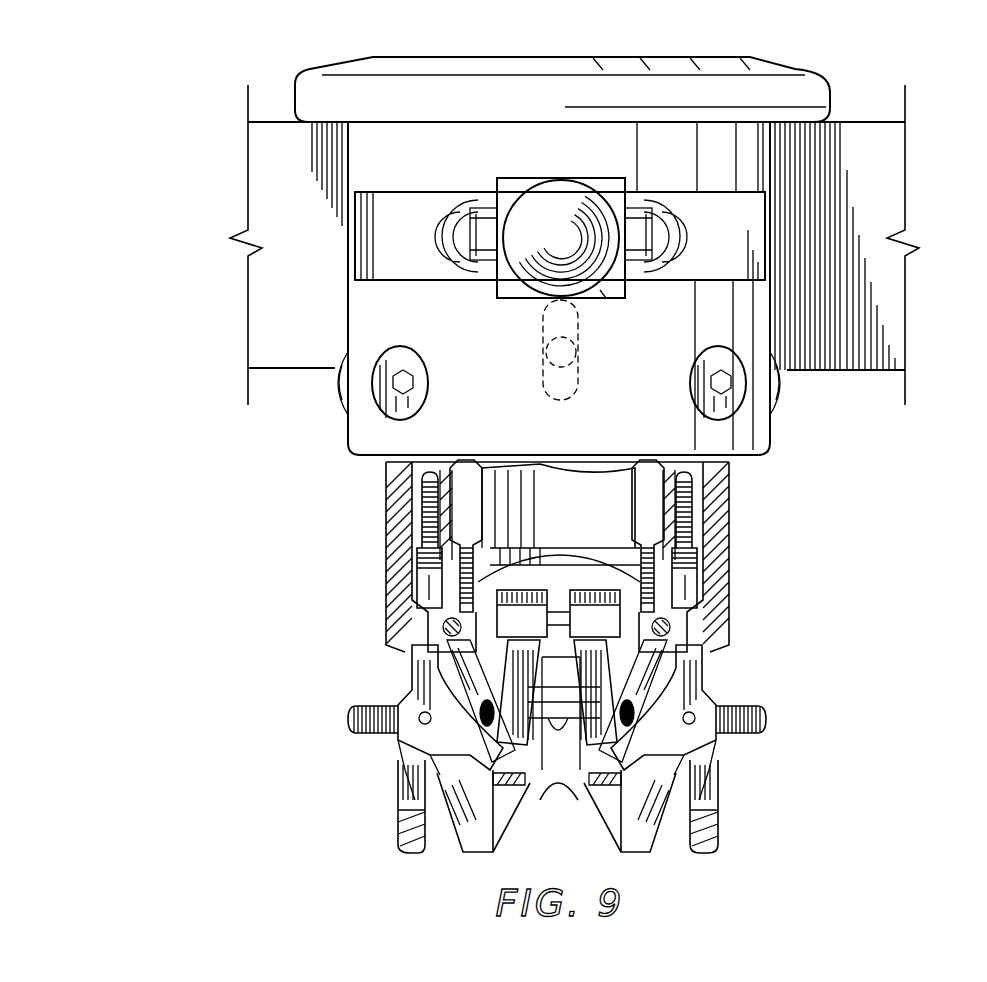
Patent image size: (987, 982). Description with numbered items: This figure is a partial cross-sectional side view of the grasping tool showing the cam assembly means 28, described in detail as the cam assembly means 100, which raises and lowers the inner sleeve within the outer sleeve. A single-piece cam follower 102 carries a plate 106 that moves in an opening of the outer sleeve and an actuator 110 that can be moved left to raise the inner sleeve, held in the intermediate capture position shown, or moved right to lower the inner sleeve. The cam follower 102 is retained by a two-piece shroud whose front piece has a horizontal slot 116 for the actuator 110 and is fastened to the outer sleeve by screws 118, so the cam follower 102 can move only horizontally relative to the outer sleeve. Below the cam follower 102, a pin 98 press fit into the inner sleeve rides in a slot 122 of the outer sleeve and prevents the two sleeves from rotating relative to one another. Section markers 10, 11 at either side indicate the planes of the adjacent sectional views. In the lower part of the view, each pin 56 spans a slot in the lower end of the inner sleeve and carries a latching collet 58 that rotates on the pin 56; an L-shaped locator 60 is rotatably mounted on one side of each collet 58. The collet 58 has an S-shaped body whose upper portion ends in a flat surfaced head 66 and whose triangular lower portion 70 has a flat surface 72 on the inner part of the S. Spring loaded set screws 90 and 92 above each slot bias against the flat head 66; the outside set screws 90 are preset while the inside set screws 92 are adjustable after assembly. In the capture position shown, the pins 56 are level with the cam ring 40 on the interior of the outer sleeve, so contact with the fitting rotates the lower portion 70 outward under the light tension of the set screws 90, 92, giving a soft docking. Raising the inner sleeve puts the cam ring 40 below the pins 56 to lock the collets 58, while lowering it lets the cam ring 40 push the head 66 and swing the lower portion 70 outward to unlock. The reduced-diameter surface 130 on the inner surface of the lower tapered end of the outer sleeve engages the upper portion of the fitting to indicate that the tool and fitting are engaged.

The microconical fitting 10 is at (213, 233).
The section line 11- 11 is at (212, 345).
The cam assembly means 28 is at (395, 162).
The cam ring 40 is at (712, 628).
The pin 56 is at (428, 648).
The latching collet 58 is at (683, 693).
The L-shaped locator 60 is at (432, 760).
The flat surfaced head 66 is at (690, 604).
The lower portion 70 is at (680, 758).
The flat surface 72 is at (592, 798).
The outside set screw 90 is at (428, 584).
The inside set screw 92 is at (602, 562).
The pin 98 is at (545, 355).
The cam assembly means 100 is at (556, 205).
The cam follower 102 is at (515, 178).
The plate 106 is at (604, 285).
The actuator 110 is at (527, 258).
The horizontal slot 116 is at (660, 215).
The screws 118 is at (412, 398).
The slot 122 is at (548, 383).
The surface 130 is at (557, 727).